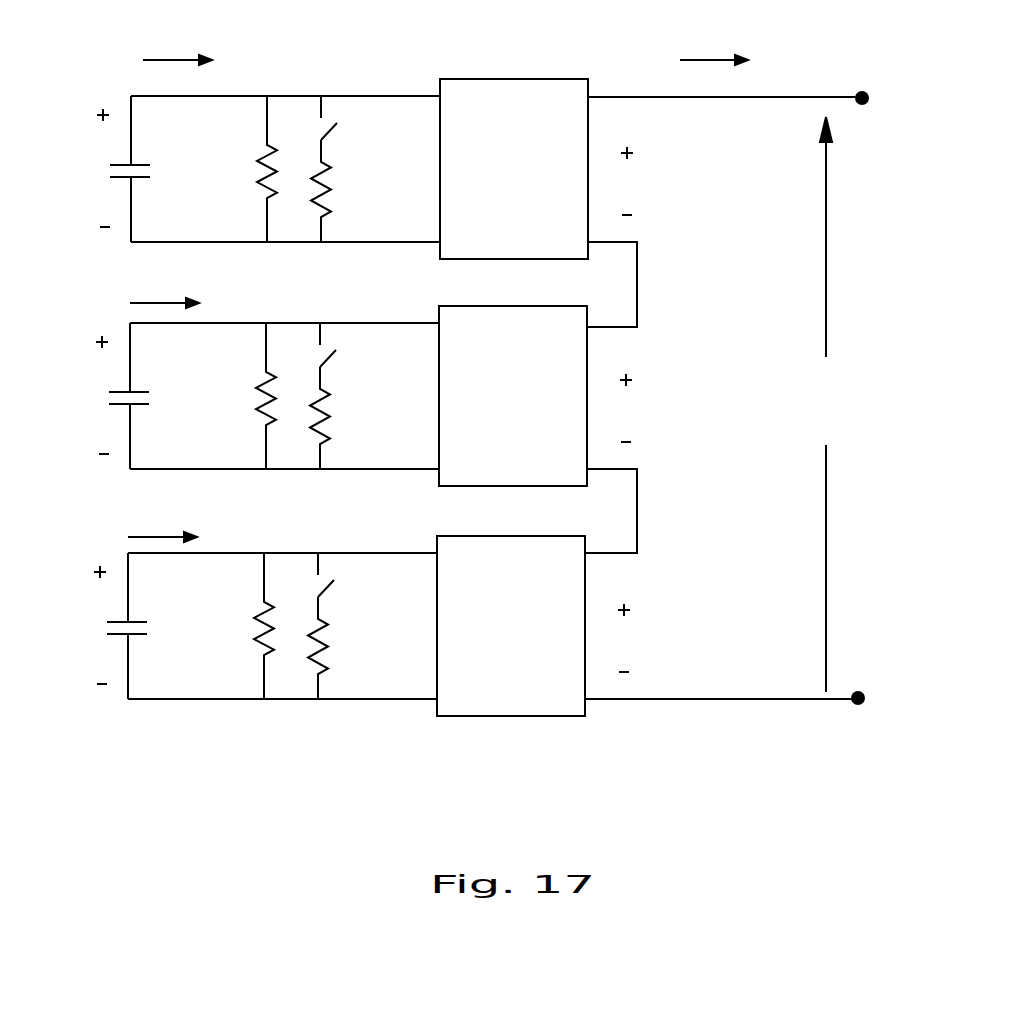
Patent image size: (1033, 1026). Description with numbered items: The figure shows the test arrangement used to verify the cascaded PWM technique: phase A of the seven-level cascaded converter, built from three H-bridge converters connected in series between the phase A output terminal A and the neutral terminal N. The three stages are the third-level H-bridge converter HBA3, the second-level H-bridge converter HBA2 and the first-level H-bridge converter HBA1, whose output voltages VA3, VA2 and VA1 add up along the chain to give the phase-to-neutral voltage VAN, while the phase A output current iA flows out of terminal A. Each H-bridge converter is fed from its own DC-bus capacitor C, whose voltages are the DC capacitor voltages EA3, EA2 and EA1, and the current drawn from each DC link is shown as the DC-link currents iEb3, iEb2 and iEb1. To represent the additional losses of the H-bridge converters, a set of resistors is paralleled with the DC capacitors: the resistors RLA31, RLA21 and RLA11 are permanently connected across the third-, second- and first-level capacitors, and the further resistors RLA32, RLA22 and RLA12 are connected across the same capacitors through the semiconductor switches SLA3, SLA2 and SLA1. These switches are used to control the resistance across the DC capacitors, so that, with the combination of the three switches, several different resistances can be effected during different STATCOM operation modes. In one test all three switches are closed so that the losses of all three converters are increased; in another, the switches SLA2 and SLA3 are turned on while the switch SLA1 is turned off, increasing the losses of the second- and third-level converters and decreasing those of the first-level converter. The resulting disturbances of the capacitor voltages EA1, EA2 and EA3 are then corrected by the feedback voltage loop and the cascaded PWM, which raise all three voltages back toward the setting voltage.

The DC capacitor voltage of the third-level H-bridge converter EA3 is at (101, 168).
The DC capacitor voltage of the second-level H-bridge converter EA2 is at (100, 395).
The DC capacitor voltage of the first-level H-bridge converter EA1 is at (98, 625).
The DC capacitor C is at (139, 400).
The resistor paralleled with the third-level DC capacitor RLA31 is at (218, 169).
The switched resistor of the third-level DC capacitor RLA32 is at (367, 191).
The semiconductor switch of the third-level H-bridge SLA3 is at (371, 124).
The resistor paralleled with the second-level DC capacitor RLA21 is at (217, 396).
The switched resistor of the second-level DC capacitor RLA22 is at (366, 418).
The semiconductor switch of the second-level H-bridge SLA2 is at (370, 351).
The resistor paralleled with the first-level DC capacitor RLA11 is at (215, 626).
The switched resistor of the first-level DC capacitor RLA12 is at (364, 648).
The semiconductor switch of the first-level H-bridge SLA1 is at (368, 581).
The third-level H-bridge converter HBA3 is at (514, 169).
The second-level H-bridge converter HBA2 is at (513, 396).
The first-level H-bridge converter HBA1 is at (511, 626).
The output voltage of the third-level H-bridge converter VA3 is at (631, 181).
The output voltage of the second-level H-bridge converter VA2 is at (630, 408).
The output voltage of the first-level H-bridge converter VA1 is at (628, 638).
The DC-link current of the third-level H-bridge iEb3 is at (177, 35).
The DC-link current of the second-level H-bridge iEb2 is at (164, 278).
The DC-link current of the first-level H-bridge iEb1 is at (162, 512).
The phase A output current iA is at (714, 33).
The phase-to-neutral output voltage VAN is at (830, 404).
The phase A output terminal A is at (746, 104).
The neutral terminal N is at (740, 698).